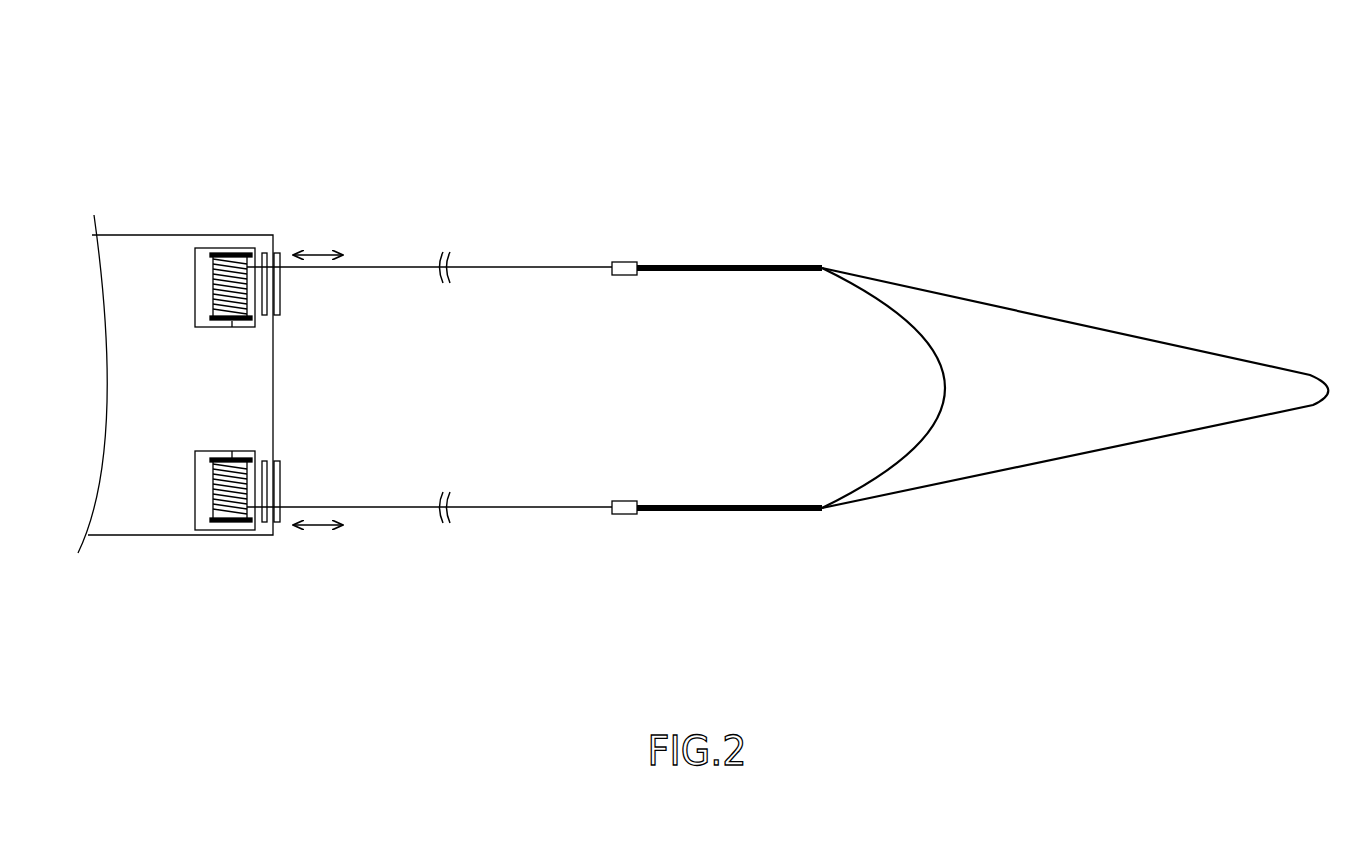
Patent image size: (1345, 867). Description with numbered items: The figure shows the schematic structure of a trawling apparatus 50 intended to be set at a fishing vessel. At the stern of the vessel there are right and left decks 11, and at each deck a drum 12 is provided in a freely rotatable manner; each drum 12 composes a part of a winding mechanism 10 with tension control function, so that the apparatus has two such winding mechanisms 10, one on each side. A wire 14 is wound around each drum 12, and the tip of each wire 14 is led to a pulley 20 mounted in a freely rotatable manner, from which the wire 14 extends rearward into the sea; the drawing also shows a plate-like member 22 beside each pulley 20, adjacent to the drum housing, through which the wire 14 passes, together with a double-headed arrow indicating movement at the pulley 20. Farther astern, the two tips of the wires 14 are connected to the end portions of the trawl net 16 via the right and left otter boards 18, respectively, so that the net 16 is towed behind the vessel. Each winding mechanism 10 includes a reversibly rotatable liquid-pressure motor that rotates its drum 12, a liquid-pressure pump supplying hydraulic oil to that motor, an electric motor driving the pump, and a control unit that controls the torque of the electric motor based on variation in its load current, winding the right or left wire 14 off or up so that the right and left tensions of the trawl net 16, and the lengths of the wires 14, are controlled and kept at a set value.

The trawling apparatus 50 is at (482, 118).
The deck 11 is at (120, 245).
The winding mechanism with tension control function 10 is at (198, 248).
The drum 12 is at (226, 253).
The plate 22 is at (263, 253).
The pulley 20 is at (278, 250).
The wire 14 is at (532, 267).
The otter board 18 is at (633, 262).
The trawl net 16 is at (937, 297).